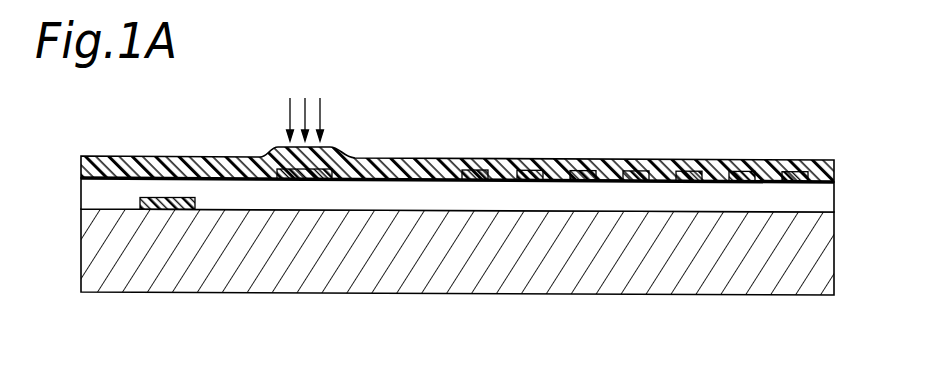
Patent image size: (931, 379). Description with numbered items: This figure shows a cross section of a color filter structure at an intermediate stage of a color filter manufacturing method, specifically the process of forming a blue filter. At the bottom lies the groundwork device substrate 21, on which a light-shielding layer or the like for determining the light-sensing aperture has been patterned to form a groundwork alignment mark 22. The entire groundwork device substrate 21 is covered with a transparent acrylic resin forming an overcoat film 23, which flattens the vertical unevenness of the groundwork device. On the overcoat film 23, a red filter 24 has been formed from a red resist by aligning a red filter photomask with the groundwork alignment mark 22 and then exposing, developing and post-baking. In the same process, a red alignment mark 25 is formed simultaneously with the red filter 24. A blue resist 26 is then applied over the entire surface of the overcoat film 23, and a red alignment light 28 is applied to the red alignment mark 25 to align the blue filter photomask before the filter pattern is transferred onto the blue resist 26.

The groundwork device substrate 21 is at (645, 287).
The groundwork alignment mark 22 is at (143, 197).
The overcoat film 23 is at (823, 200).
The red filter 24 is at (480, 169).
The red alignment mark 25 is at (303, 179).
The blue resist 26 is at (168, 167).
The red alignment light 28 is at (322, 104).